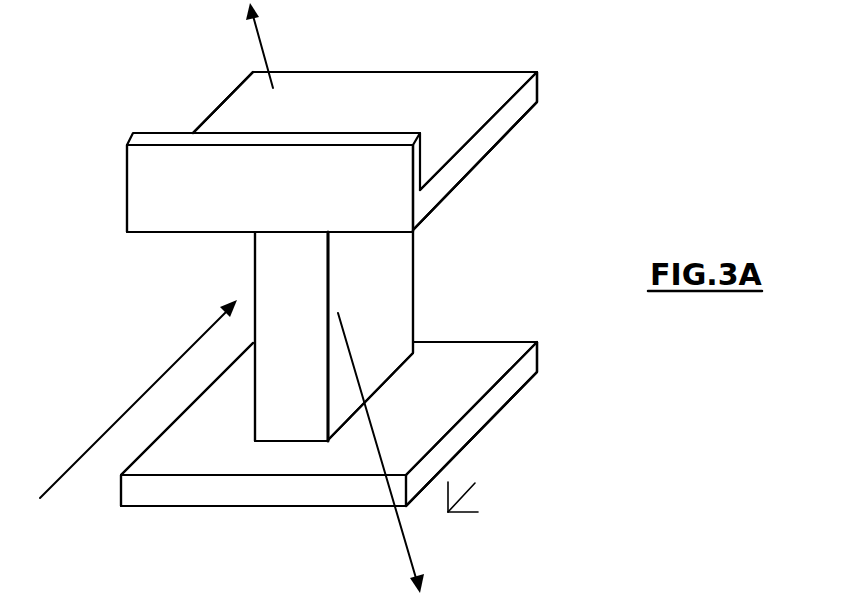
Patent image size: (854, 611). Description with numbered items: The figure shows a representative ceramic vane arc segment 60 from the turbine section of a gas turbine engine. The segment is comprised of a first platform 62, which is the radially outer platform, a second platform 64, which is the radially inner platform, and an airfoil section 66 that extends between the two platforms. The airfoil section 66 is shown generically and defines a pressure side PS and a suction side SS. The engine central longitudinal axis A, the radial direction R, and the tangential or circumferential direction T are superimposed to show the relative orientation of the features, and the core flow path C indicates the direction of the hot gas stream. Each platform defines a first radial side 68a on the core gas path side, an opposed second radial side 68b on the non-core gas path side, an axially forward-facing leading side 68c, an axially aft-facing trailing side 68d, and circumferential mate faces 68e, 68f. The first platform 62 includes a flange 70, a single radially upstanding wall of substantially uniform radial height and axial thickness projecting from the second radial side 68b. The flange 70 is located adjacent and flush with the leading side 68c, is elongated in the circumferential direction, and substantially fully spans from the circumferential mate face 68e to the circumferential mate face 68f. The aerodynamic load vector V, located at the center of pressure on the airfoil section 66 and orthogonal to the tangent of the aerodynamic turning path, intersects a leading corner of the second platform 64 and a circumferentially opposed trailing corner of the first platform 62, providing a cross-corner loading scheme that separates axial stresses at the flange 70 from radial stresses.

The ceramic vane arc segment 60 is at (132, 325).
The first platform 62 is at (503, 153).
The second platform 64 is at (207, 516).
The airfoil section 66 is at (394, 291).
The flange 70 is at (146, 162).
The first radial side 68a is at (450, 192).
The second radial side 68b is at (455, 88).
The leading side 68c is at (148, 215).
The trailing side 68d is at (538, 86).
The circumferential mate face 68e is at (503, 118).
The circumferential mate face 68f is at (209, 117).
The aerodynamic load vector V is at (268, 48).
The core flow path C is at (90, 447).
The tangential (circumferential) direction T is at (468, 512).
The radial direction R is at (448, 500).
The engine central longitudinal axis A is at (456, 490).
The suction side SS is at (255, 293).
The pressure side PS is at (391, 330).